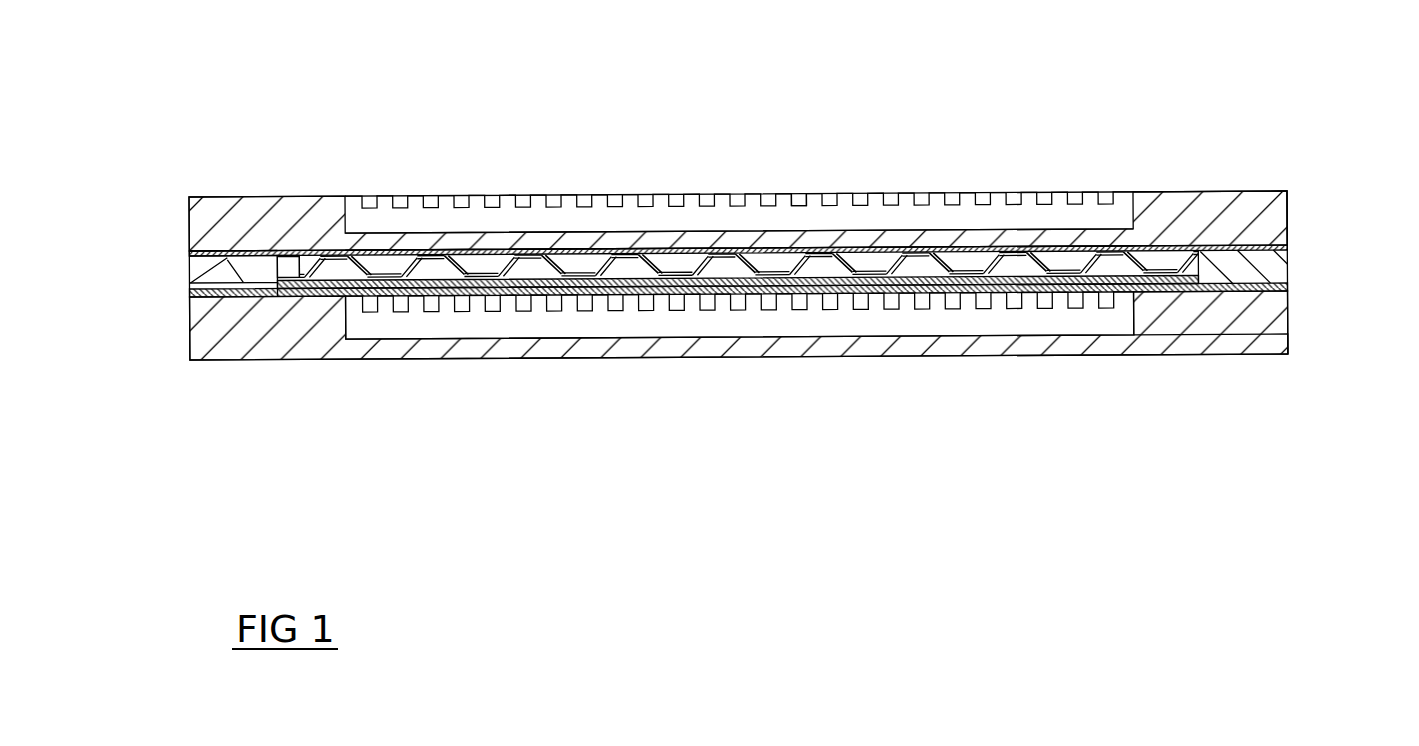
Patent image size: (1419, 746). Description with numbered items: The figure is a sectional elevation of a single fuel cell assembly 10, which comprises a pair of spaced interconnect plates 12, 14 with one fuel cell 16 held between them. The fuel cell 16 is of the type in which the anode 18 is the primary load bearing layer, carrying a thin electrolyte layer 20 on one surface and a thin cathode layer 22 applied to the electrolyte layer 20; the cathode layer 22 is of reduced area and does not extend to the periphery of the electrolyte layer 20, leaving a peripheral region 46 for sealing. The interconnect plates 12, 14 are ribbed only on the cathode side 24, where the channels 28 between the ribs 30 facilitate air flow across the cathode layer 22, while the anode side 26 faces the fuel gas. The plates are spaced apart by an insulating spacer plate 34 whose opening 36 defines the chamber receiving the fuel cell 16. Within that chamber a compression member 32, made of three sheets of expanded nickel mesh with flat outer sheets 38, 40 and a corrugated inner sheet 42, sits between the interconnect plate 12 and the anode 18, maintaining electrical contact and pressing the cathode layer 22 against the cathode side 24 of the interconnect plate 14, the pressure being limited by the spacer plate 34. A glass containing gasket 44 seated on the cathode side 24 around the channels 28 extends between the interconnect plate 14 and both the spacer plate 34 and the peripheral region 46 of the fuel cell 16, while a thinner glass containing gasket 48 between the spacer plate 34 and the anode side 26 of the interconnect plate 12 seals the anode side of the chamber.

The fuel cell assembly 10 is at (1344, 136).
The interconnect plate 12 is at (1287, 211).
The interconnect plate 14 is at (1288, 335).
The fuel cell 16 is at (200, 290).
The anode 18 is at (975, 266).
The electrolyte layer 20 is at (372, 318).
The cathode layer 22 is at (507, 300).
The cathode side 24 is at (1252, 193).
The anode side 26 is at (226, 259).
The channels 28 is at (668, 207).
The ribs 30 is at (797, 207).
The compression member 32 is at (1290, 250).
The insulating spacer plate 34 is at (1289, 278).
The opening 36 is at (1183, 250).
The outer sheet 38 is at (380, 250).
The outer sheet 40 is at (628, 282).
The inner sheet 42 is at (497, 258).
The glass containing gasket 44 is at (1289, 291).
The peripheral region 46 is at (302, 290).
The glass containing gasket 48 is at (235, 255).